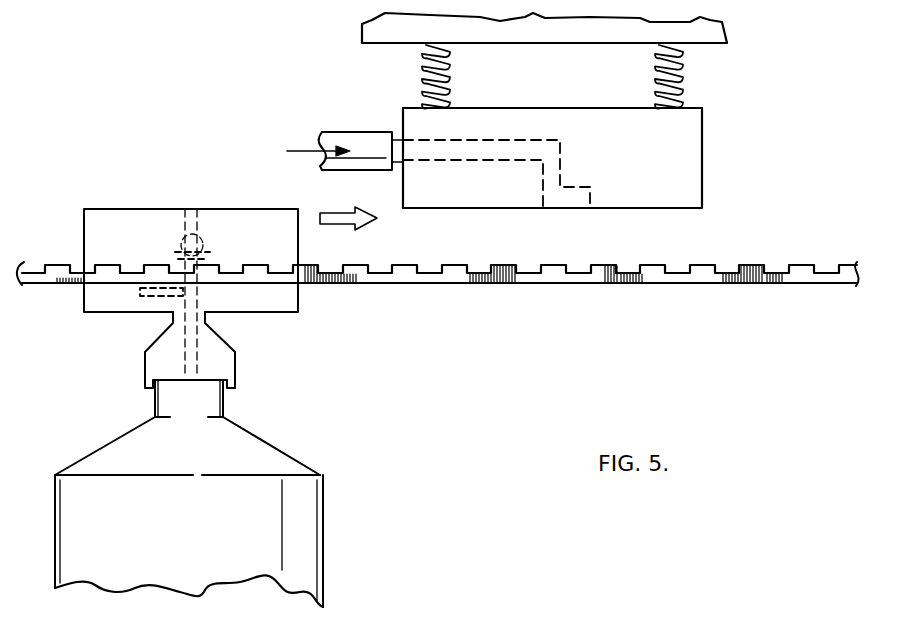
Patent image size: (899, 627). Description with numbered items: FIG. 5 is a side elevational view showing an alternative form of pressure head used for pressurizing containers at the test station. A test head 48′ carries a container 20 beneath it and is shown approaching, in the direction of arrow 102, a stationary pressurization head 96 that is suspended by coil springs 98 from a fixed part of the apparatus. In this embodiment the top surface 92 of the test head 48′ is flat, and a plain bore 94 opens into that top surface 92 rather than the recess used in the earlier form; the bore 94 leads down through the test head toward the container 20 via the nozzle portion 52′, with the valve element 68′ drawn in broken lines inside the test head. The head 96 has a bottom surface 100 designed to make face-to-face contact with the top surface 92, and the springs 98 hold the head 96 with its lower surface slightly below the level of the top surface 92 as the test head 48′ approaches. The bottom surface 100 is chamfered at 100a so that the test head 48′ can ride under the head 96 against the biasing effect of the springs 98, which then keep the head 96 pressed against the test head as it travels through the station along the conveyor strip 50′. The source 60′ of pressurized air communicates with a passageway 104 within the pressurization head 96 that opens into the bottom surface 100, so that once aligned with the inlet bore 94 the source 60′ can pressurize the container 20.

The container 20 is at (308, 535).
The test head 48′ is at (169, 281).
The tape strip 50′ is at (560, 285).
The nozzle 52′ is at (228, 360).
The source of pressurized air 60′ is at (301, 148).
The valve member 68′ is at (175, 248).
The top surface 92 is at (148, 209).
The bore 94 is at (190, 209).
The pressurization head 96 is at (579, 133).
The coil springs 98 is at (655, 78).
The bottom surface 100 is at (685, 210).
The chamfer 100a is at (430, 208).
The arrow 102 is at (338, 208).
The passageway 104 is at (558, 150).